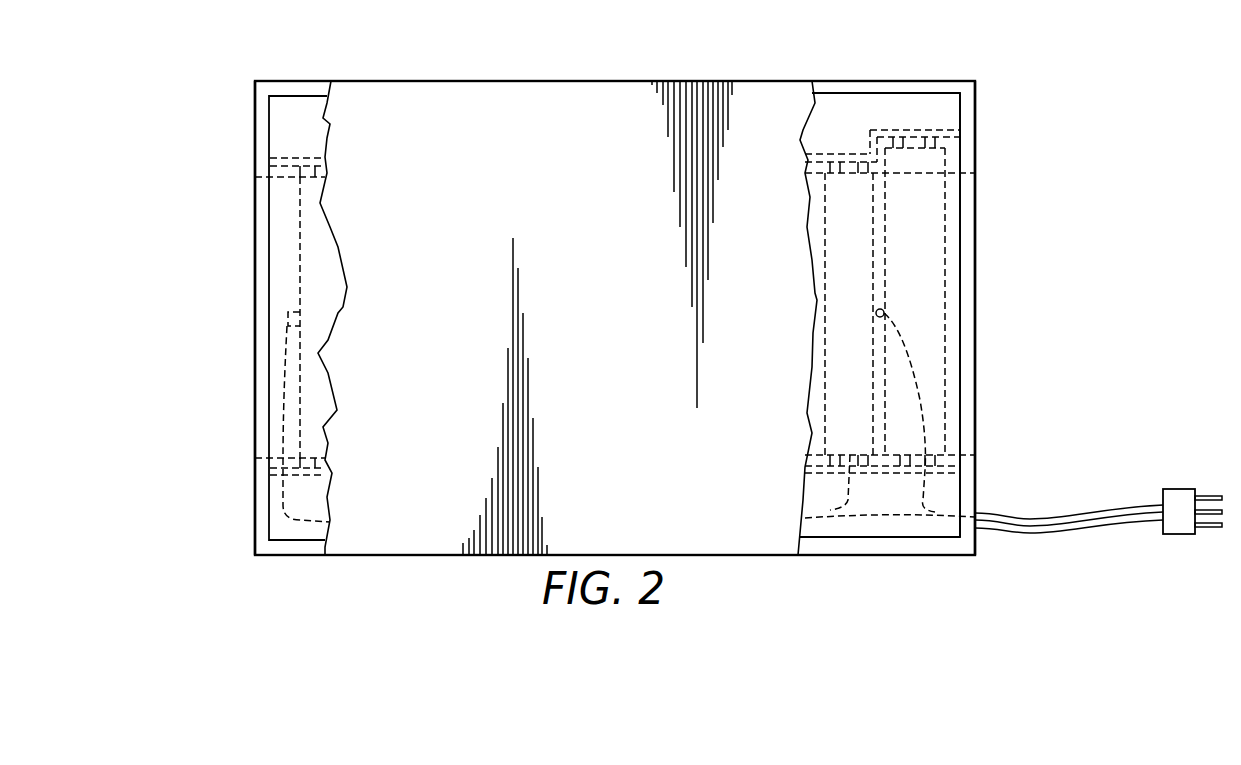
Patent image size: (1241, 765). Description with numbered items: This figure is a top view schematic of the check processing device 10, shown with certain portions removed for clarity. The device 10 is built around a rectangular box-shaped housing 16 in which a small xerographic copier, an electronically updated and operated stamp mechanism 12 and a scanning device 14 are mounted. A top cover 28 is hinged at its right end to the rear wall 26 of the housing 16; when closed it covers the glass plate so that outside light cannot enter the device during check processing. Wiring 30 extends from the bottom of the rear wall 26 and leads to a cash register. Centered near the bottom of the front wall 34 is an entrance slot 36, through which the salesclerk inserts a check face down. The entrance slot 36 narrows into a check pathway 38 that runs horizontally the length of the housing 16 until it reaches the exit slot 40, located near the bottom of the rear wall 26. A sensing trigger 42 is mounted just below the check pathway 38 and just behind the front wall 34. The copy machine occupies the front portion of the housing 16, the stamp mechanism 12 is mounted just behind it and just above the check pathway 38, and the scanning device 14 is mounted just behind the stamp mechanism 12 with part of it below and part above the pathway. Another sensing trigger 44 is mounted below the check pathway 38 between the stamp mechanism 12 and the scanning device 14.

The check processing device 10 is at (343, 49).
The stamp mechanism 12 is at (840, 305).
The scanning device 14 is at (935, 265).
The housing 16 is at (984, 122).
The rear wall 26 is at (970, 160).
The top cover 28 is at (562, 92).
The wiring 30 is at (1113, 510).
The front wall 34 is at (260, 131).
The entrance slot 36 is at (243, 330).
The check pathway 38 is at (287, 216).
The exit slot 40 is at (987, 318).
The sensing trigger 42 is at (293, 318).
The sensing trigger 44 is at (876, 313).